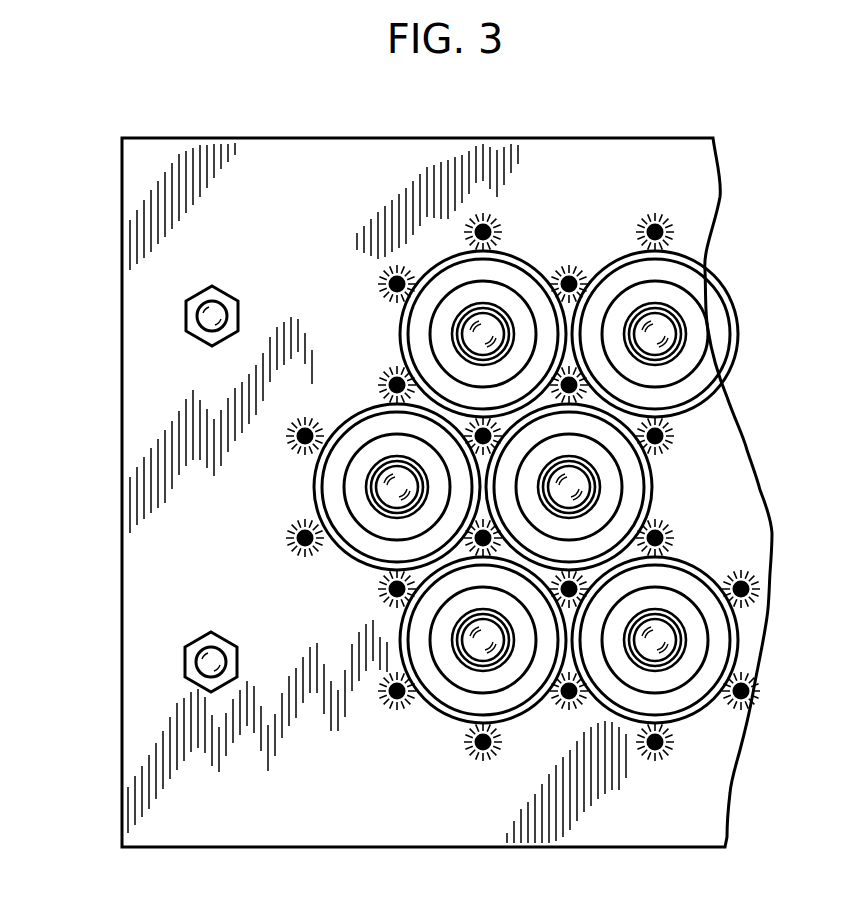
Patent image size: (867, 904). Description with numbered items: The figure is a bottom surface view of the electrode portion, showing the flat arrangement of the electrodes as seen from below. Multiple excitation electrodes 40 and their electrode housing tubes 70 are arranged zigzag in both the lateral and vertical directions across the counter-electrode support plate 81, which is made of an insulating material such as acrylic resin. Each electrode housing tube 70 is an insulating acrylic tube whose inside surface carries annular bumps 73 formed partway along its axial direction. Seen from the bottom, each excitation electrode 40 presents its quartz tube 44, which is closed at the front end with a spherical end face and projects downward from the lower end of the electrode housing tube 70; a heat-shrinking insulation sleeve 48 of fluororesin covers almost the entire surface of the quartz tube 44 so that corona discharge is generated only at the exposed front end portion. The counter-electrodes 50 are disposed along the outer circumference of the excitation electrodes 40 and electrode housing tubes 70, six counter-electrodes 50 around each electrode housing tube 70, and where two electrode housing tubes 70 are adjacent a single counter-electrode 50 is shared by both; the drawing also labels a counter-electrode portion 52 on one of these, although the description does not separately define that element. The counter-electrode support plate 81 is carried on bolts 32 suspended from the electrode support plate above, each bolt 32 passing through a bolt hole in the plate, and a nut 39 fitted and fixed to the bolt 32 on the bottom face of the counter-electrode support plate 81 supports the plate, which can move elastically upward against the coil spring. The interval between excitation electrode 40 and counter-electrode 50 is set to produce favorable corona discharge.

The counter-electrode support plate 81 is at (670, 808).
The nut 39 is at (210, 287).
The bolt 32 is at (198, 318).
The electrode housing tube 70 is at (398, 337).
The annular bumps 73 is at (702, 373).
The excitation electrode 40 is at (470, 290).
The insulation sleeve 48 is at (663, 307).
The quartz tube 44 is at (663, 337).
The counter-electrode 50 is at (568, 243).
The star fastener 52 is at (670, 222).